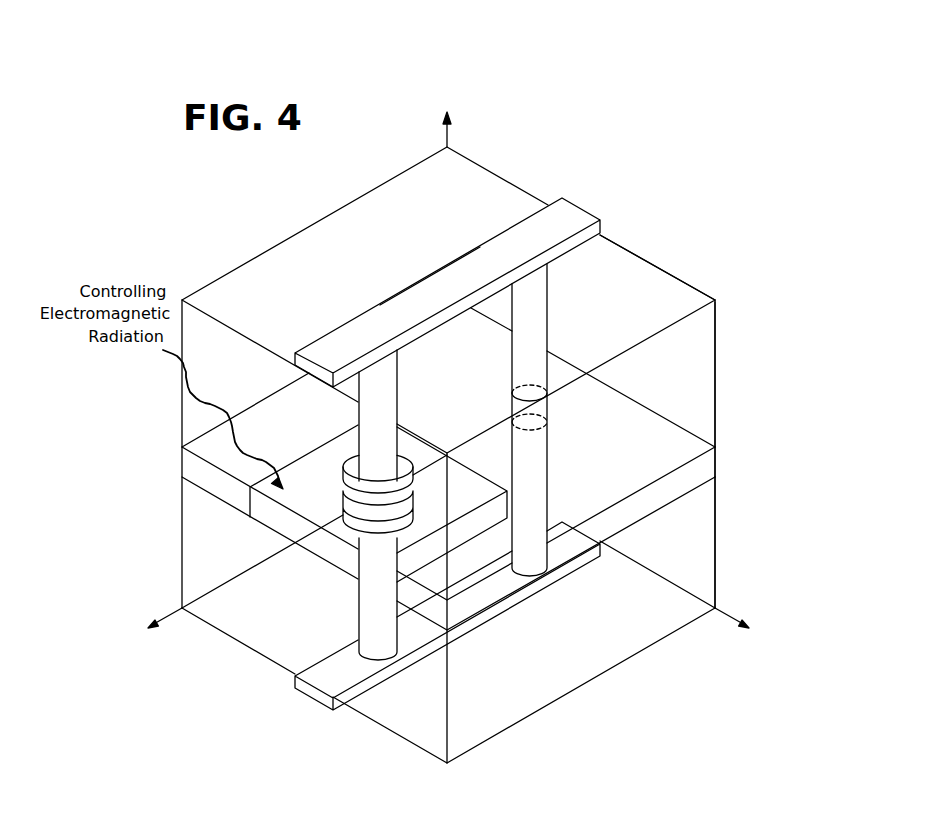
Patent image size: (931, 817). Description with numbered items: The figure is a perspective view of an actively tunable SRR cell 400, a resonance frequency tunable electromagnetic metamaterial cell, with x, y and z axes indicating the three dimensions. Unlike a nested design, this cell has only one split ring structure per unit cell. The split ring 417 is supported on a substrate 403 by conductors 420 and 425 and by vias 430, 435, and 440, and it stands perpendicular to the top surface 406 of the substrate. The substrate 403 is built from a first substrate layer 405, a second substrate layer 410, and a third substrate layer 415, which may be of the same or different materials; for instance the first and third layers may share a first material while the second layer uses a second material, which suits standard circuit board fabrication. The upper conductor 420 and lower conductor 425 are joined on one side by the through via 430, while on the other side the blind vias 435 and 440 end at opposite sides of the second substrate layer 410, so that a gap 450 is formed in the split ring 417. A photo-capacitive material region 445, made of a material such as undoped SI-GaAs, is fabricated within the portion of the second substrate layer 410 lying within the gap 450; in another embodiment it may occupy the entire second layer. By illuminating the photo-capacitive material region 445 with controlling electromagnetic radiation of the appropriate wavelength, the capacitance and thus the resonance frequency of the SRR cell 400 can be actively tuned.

The actively tunable SRR cell 400 is at (425, 103).
The substrate 403 is at (779, 373).
The first substrate layer 405 is at (708, 392).
The top surface 406 is at (676, 284).
The second substrate layer 410 is at (708, 463).
The third substrate layer 415 is at (708, 532).
The split ring 417 is at (390, 282).
The conductor 420 is at (476, 248).
The conductor 425 is at (363, 690).
The via 430 is at (548, 323).
The blind via 435 is at (366, 413).
The blind via 440 is at (367, 593).
The photo-capacitive material region 445 is at (272, 523).
The gap 450 is at (418, 516).